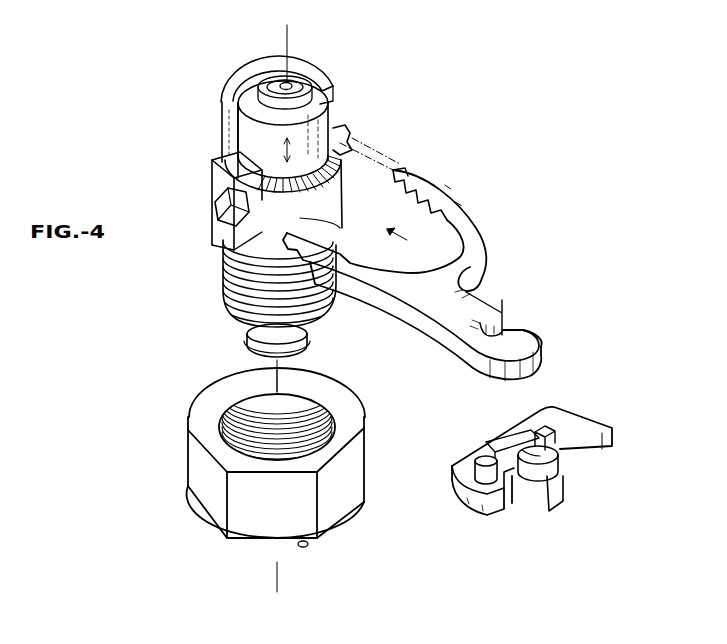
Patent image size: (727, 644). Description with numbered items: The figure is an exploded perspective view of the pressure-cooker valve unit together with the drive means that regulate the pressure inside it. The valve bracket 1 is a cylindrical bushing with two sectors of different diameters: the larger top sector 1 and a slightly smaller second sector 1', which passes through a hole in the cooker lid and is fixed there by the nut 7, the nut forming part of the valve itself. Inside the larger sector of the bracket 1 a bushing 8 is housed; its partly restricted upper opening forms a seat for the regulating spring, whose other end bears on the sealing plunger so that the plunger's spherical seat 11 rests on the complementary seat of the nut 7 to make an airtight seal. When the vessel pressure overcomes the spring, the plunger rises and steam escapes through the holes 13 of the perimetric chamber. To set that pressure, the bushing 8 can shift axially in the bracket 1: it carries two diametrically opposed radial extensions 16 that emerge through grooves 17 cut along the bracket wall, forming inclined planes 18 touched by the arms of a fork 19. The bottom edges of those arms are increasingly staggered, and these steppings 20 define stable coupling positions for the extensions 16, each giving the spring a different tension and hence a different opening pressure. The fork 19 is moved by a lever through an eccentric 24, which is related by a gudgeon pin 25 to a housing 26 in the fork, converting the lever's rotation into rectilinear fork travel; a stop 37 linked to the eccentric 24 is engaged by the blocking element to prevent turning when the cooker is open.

The valve bracket 1 is at (256, 114).
The second sector 1' is at (242, 300).
The nut 7 is at (200, 477).
The bushing 8 is at (332, 88).
The spherical seat 11 is at (312, 336).
The holes 13 is at (310, 549).
The radial extensions 16 is at (212, 194).
The grooves 17 is at (222, 128).
The inclined planes 18 is at (218, 241).
The fork 19 is at (473, 230).
The steppings 20 is at (441, 216).
The eccentric 24 is at (493, 481).
The gudgeon pin 25 is at (457, 480).
The housing 26 is at (505, 325).
The stop 37 is at (565, 497).